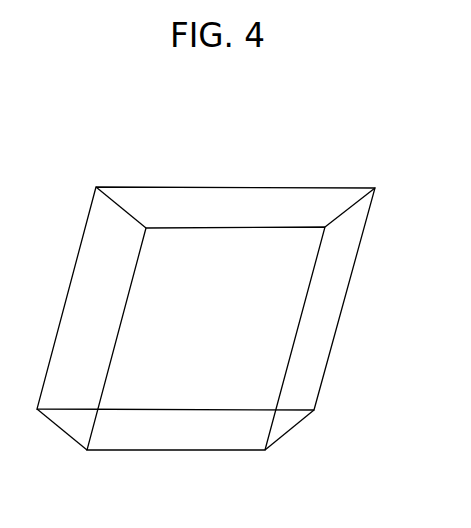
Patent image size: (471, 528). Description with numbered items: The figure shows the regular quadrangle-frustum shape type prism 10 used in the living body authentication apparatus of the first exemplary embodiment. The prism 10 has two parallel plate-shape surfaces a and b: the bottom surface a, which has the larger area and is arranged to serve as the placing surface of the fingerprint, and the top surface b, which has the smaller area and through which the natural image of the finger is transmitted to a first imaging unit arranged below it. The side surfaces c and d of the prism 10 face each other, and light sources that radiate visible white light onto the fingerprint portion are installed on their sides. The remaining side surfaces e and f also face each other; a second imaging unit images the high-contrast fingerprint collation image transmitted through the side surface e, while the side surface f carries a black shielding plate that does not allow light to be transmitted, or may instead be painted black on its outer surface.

The regular quadrangle-frustum shape type prism 10 is at (335, 188).
The surface a is at (166, 358).
The surface b is at (237, 291).
The side surface c is at (167, 430).
The side surface d is at (222, 207).
The side surface e is at (92, 309).
The side surface f is at (316, 318).